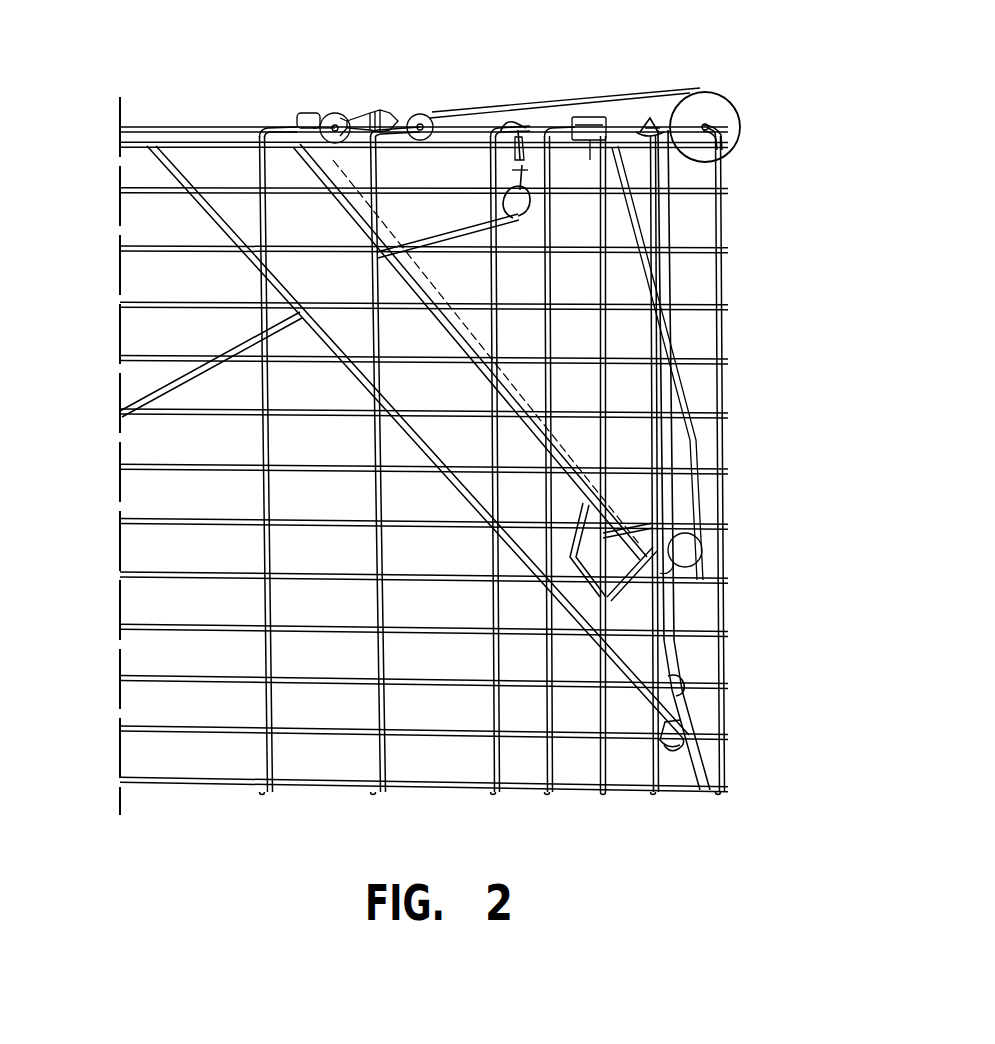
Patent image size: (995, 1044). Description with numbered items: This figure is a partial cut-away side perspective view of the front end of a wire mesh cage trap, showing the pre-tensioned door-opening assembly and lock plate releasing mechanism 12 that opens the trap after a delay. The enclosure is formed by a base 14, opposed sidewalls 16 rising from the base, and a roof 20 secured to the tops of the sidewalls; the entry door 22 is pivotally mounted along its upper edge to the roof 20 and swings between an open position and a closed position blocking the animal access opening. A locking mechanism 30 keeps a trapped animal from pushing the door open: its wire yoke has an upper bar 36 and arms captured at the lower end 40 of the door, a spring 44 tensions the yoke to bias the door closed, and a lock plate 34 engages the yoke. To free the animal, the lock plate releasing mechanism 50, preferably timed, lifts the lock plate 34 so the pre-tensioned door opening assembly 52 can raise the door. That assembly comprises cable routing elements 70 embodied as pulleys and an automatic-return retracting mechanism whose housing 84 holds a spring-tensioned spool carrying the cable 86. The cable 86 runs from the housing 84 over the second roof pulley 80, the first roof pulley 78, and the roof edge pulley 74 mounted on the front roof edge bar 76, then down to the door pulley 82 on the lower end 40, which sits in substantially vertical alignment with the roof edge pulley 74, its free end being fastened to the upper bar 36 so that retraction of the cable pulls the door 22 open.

The pre-tensioned door-opening assembly and lock plate releasing mechanism 12 is at (319, 87).
The base 14 is at (520, 791).
The sidewalls 16 is at (146, 521).
The roof 20 is at (133, 125).
The entry door 22 is at (633, 660).
The locking mechanism 30 is at (694, 500).
The lock plate 34 is at (545, 130).
The upper bar 36 is at (647, 120).
The lower end of the door 40 is at (677, 720).
The spring 44 is at (693, 673).
The lock plate releasing mechanism 50 is at (650, 175).
The pre-tensioned door opening assembly 52 is at (738, 87).
The cable routing elements 70 is at (553, 75).
The roof edge pulley 74 is at (723, 120).
The front roof edge bar 76 is at (715, 132).
The first roof pulley 78 is at (425, 122).
The second roof pulley 80 is at (337, 125).
The door pulley 82 is at (693, 538).
The housing 84 is at (297, 118).
The cable 86 is at (604, 115).